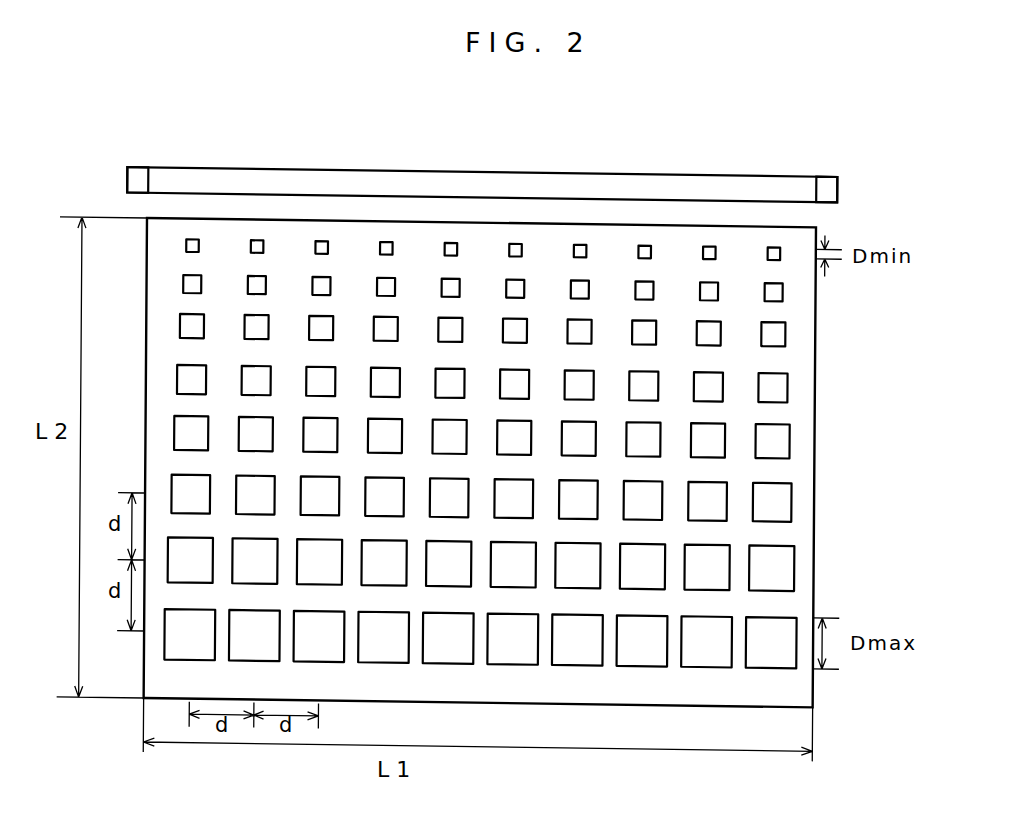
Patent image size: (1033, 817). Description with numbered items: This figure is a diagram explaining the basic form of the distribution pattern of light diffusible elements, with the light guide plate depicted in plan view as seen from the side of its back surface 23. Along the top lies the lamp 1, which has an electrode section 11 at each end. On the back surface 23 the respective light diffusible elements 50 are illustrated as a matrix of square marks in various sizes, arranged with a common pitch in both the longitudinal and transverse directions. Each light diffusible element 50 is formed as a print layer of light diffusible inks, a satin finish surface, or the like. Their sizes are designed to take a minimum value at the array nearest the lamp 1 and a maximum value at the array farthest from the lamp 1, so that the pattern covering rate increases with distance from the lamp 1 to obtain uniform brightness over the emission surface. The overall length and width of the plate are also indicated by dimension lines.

The lamp 1 is at (350, 180).
The electrode section 11 is at (140, 178).
The back surface 23 is at (804, 361).
The light diffusible element 50 is at (772, 445).